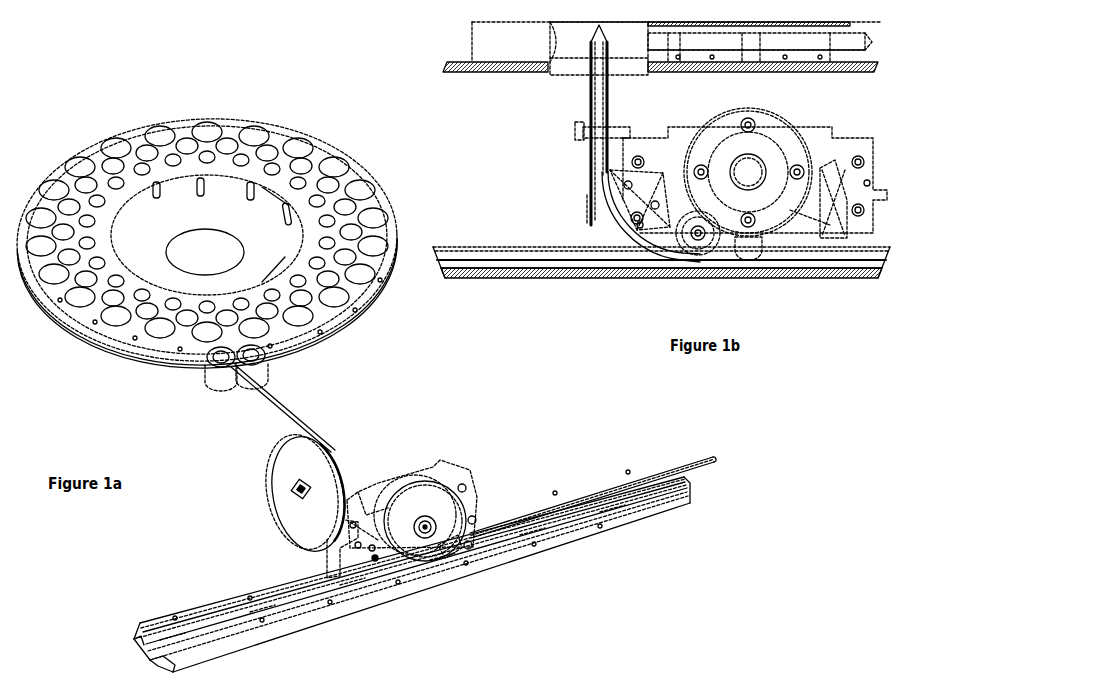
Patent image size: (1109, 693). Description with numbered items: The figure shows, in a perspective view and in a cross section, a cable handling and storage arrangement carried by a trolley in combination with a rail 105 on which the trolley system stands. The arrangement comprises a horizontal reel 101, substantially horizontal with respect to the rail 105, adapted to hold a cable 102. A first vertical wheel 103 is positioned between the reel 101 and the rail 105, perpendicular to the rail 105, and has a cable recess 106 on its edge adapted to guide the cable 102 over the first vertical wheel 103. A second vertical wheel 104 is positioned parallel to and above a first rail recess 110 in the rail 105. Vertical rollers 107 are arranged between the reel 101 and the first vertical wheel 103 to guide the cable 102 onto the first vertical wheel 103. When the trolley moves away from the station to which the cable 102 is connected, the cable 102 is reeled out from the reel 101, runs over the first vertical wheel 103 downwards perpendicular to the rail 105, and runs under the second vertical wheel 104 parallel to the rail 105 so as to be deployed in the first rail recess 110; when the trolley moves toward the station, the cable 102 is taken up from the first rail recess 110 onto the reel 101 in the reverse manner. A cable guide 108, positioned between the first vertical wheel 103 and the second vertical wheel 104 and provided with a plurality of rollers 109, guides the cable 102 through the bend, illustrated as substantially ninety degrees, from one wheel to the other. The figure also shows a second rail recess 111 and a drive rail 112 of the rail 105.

In FIG. 1A, the horizontal reel 101 is at (377, 307).
In FIG. 1B, the horizontal reel 101 is at (884, 68).
In FIG. 1A, the cable 102 is at (284, 414).
In FIG. 1B, the cable 102 is at (868, 263).
In FIG. 1A, the first vertical wheel 103 is at (292, 458).
In FIG. 1B, the first vertical wheel 103 is at (590, 180).
In FIG. 1B, the second vertical wheel 104 is at (713, 253).
In FIG. 1A, the rail 105 is at (614, 514).
In FIG. 1B, the rail 105 is at (555, 268).
In FIG. 1B, the cable recess 106 is at (597, 225).
In FIG. 1A, the vertical rollers 107 is at (216, 381).
In FIG. 1B, the vertical rollers 107 is at (572, 55).
In FIG. 1A, the cable guide 108 is at (364, 557).
In FIG. 1B, the cable guide 108 is at (651, 178).
In FIG. 1B, the rollers 109 is at (641, 236).
In FIG. 1A, the first rail recess 110 is at (132, 641).
In FIG. 1A, the second rail recess 111 is at (157, 662).
In FIG. 1A, the drive rail 112 is at (675, 481).